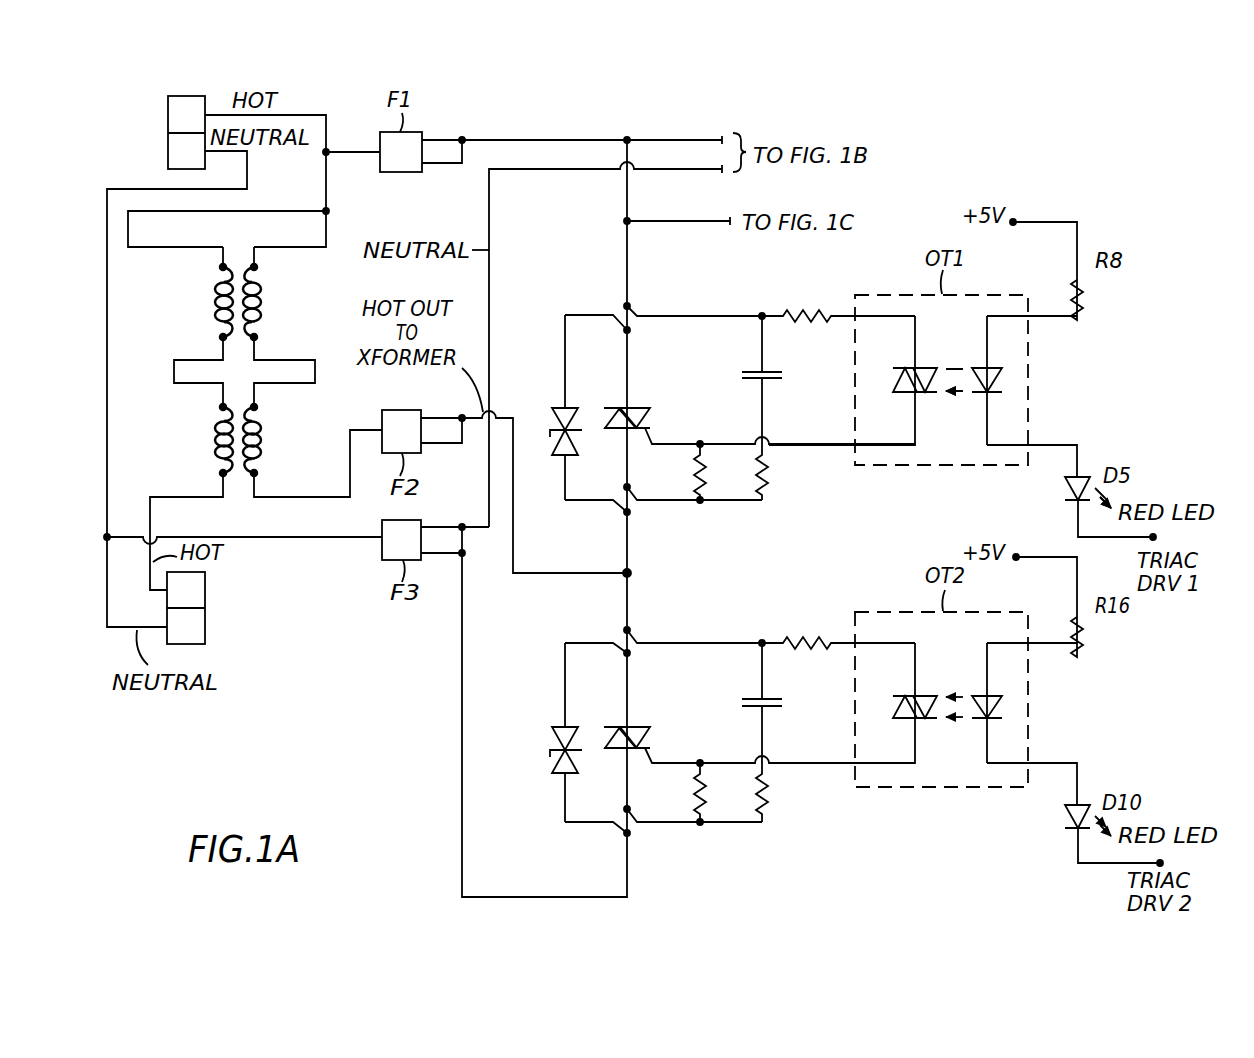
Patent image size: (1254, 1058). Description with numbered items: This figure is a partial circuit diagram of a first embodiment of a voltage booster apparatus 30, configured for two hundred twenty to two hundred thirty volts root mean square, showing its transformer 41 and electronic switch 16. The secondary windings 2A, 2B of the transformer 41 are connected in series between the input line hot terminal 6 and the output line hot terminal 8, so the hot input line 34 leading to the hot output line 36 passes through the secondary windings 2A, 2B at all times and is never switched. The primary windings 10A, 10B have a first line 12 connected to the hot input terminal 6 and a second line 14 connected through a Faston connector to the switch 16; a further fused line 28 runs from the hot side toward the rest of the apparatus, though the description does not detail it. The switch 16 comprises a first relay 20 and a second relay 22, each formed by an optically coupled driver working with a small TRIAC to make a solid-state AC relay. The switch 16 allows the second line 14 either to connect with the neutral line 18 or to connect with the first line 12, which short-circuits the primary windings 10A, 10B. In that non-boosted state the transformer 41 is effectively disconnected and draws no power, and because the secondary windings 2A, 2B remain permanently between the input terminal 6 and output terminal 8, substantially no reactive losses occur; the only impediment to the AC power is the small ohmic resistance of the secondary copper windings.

The input line hot terminal 6 is at (166, 104).
The output line hot terminal 8 is at (206, 592).
The first line 12 is at (327, 227).
The second line 14 is at (311, 497).
The electronic switch 16 is at (488, 694).
The neutral line 18 is at (490, 216).
The first relay 20 is at (805, 506).
The second relay 22 is at (835, 822).
The fused hot line 28 is at (565, 138).
The voltage booster apparatus 30 is at (302, 677).
The hot input line 34 is at (285, 211).
The hot output line 36 is at (150, 580).
The transformer 41 is at (181, 327).
The secondary winding 2A is at (217, 286).
The secondary winding 2B is at (217, 440).
The primary winding 10A is at (262, 316).
The primary winding 10B is at (264, 426).